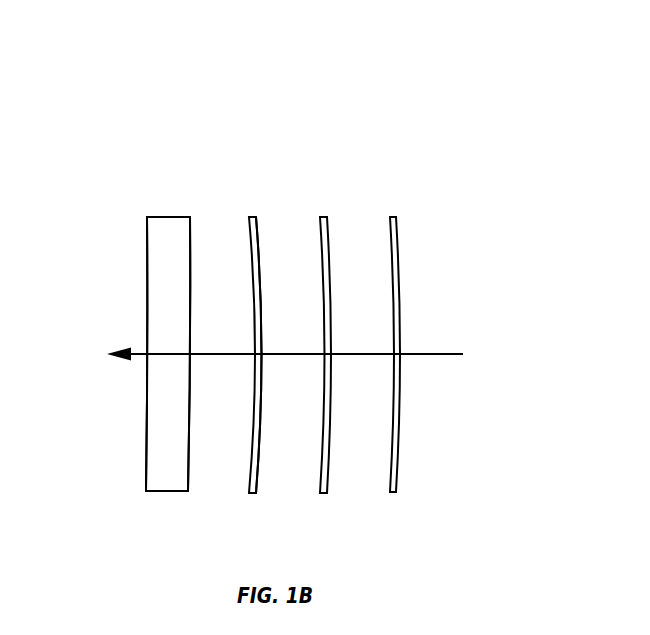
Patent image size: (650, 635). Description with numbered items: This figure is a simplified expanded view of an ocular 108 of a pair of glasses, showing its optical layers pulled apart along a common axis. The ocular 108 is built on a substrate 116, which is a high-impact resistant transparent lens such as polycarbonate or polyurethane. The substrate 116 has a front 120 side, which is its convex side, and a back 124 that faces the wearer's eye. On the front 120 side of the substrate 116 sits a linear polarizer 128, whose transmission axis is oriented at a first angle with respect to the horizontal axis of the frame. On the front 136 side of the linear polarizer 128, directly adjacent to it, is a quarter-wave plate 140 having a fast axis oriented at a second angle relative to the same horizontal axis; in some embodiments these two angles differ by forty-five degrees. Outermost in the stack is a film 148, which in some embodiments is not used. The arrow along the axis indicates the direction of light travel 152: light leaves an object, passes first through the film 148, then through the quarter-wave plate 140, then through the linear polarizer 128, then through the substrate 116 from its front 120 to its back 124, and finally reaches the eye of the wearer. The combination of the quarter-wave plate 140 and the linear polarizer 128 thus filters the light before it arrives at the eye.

The ocular 108 is at (184, 93).
The substrate 116 is at (169, 487).
The front side of the substrate 120 is at (188, 225).
The back of the substrate 124 is at (147, 238).
The linear polarizer 128 is at (250, 491).
The front side of the linear polarizer 136 is at (259, 233).
The quarter-wave plate 140 is at (323, 491).
The film 148 is at (394, 491).
The direction of light travel 152 is at (423, 354).